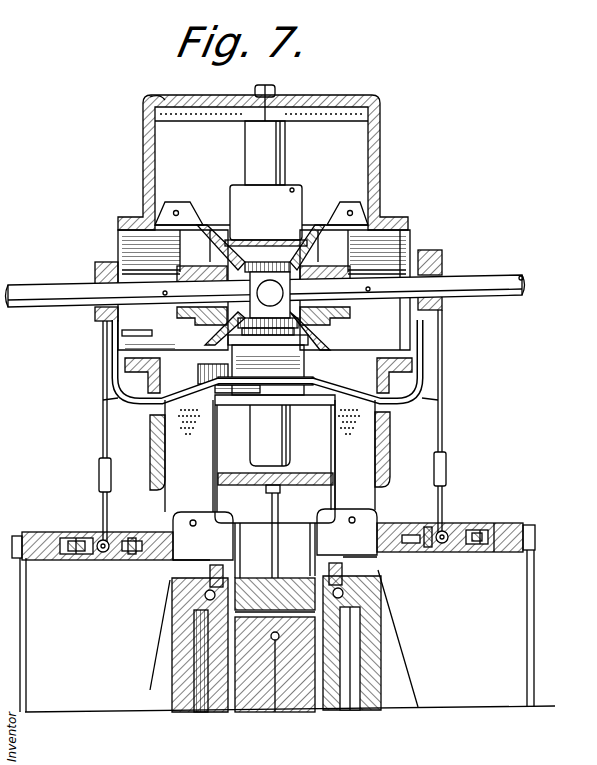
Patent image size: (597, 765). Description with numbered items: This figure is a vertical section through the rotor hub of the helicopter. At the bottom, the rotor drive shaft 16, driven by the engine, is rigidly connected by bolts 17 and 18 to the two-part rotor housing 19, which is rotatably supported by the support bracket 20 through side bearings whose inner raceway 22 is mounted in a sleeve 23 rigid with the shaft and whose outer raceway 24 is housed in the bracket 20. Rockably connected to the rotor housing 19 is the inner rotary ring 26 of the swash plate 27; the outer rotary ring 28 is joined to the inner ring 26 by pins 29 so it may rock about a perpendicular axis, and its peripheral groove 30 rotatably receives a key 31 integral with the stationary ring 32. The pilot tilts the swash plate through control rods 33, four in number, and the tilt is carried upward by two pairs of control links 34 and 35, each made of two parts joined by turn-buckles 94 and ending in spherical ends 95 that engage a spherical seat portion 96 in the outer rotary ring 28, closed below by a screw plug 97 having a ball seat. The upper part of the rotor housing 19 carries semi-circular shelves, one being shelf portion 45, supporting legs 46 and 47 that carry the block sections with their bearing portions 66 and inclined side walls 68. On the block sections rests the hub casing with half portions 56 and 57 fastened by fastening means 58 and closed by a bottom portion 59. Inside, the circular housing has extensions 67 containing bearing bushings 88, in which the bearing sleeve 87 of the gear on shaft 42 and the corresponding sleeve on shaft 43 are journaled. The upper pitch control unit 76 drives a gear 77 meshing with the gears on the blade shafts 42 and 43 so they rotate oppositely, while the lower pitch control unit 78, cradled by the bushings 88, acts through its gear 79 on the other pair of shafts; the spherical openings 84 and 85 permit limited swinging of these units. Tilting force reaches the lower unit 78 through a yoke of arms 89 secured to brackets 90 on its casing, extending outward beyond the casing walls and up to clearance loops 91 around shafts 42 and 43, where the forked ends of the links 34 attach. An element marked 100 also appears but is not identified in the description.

The rotor drive shaft 16 is at (292, 596).
The bolt 17 is at (258, 608).
The bolt 18 is at (275, 690).
The rotor housing 19 is at (283, 565).
The support bracket 20 is at (150, 682).
The inner raceway 22 is at (205, 600).
The sleeve 23 is at (392, 620).
The outer raceway 24 is at (185, 597).
The inner rotary ring 26 is at (165, 530).
The swash plate 27 is at (486, 522).
The outer rotary ring 28 is at (122, 531).
The pins 29 is at (133, 541).
The peripheral groove 30 is at (78, 558).
The key 31 is at (72, 556).
The stationary ring 32 is at (20, 536).
The control rods 33 is at (28, 643).
The control link 34 is at (102, 415).
The control link 35 is at (279, 507).
The shaft 42 is at (30, 292).
The shaft 43 is at (480, 282).
The semi-circular shelf portion 45 is at (268, 493).
The leg 46 is at (183, 456).
The leg 47 is at (360, 455).
The hub casing half portion 56 is at (165, 100).
The hub casing half portion 57 is at (381, 122).
The fastening means 58 is at (276, 90).
The bottom portion 59 is at (252, 473).
The bearing portion 66 is at (395, 236).
The extension 67 is at (210, 340).
The inclined side wall 68 is at (182, 205).
The upper pitch control unit 76 is at (286, 161).
The gear 77 is at (252, 292).
The lower pitch control unit 78 is at (291, 443).
The gear 79 is at (320, 345).
The spherical opening 84 is at (238, 262).
The lower clearance opening 85 is at (198, 372).
The bearing sleeve 87 is at (125, 335).
The bearing bushings 88 is at (178, 318).
The arms 89 is at (111, 390).
The brackets 90 is at (240, 379).
The clearance loops 91 is at (440, 252).
The turn-buckles 94 is at (98, 473).
The spherical end 95 is at (100, 560).
The spherical seat portion 96 is at (82, 533).
The screw plug 97 is at (108, 552).
The link 100 is at (135, 415).